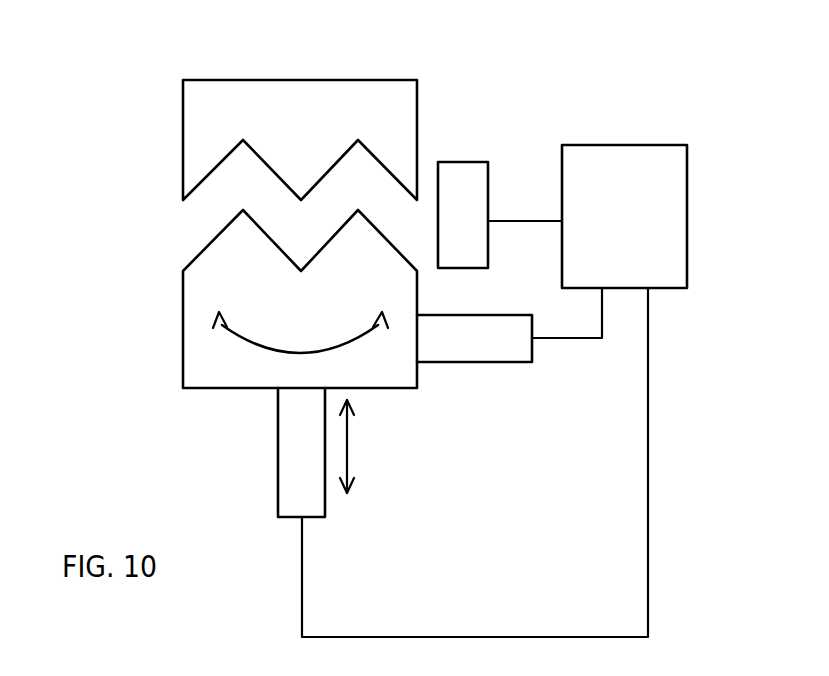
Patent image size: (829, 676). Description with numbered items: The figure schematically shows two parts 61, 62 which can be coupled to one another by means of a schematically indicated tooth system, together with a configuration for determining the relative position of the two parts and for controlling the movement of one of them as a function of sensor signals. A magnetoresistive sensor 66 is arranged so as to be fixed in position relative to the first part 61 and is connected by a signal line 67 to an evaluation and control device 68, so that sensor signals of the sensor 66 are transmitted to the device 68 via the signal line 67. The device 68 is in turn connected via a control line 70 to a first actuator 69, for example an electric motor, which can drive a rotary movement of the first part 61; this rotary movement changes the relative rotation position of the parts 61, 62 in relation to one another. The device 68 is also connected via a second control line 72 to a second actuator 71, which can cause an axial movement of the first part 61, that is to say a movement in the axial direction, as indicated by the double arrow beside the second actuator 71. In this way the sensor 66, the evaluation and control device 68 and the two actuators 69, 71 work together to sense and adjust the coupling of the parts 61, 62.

The first part 61 is at (183, 338).
The second part 62 is at (360, 80).
The magnetoresistive sensor 66 is at (488, 187).
The signal line 67 is at (522, 221).
The evaluation and control device 68 is at (687, 208).
The first actuator 69 is at (502, 362).
The control line 70 is at (580, 338).
The second actuator 71 is at (278, 459).
The second control line 72 is at (462, 637).